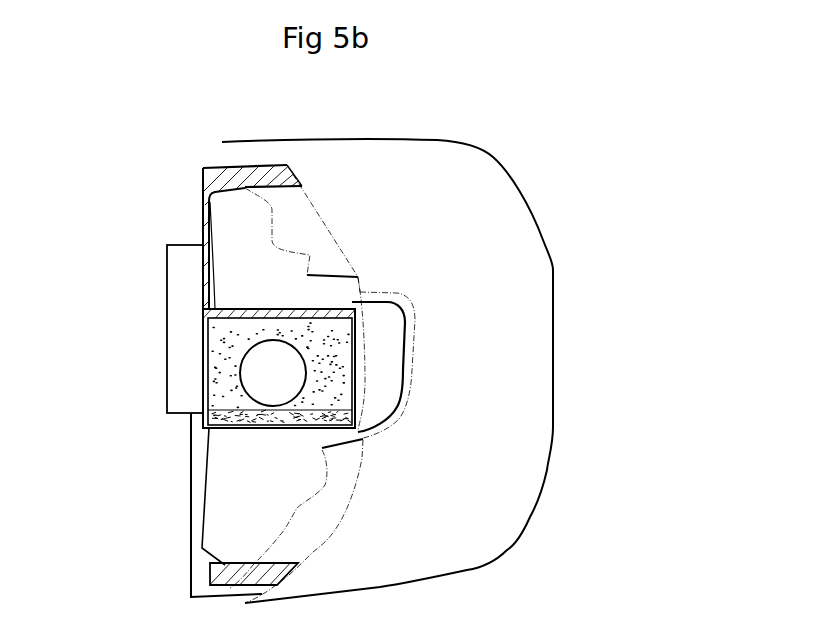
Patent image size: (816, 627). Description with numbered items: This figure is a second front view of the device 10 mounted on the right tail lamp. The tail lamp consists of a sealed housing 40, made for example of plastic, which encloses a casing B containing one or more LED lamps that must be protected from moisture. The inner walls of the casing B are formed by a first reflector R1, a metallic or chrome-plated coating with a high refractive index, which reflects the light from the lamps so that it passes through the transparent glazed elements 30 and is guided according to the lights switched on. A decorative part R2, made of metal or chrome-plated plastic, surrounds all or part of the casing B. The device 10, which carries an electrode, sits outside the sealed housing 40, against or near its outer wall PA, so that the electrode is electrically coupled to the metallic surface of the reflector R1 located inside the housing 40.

The sealed housing 40 is at (595, 170).
The transparent glazed elements 30 is at (513, 425).
The device 10 is at (178, 345).
The casing B is at (228, 402).
The outer wall PA is at (203, 388).
The first reflector R1 is at (242, 432).
The decorative part R2 is at (228, 175).